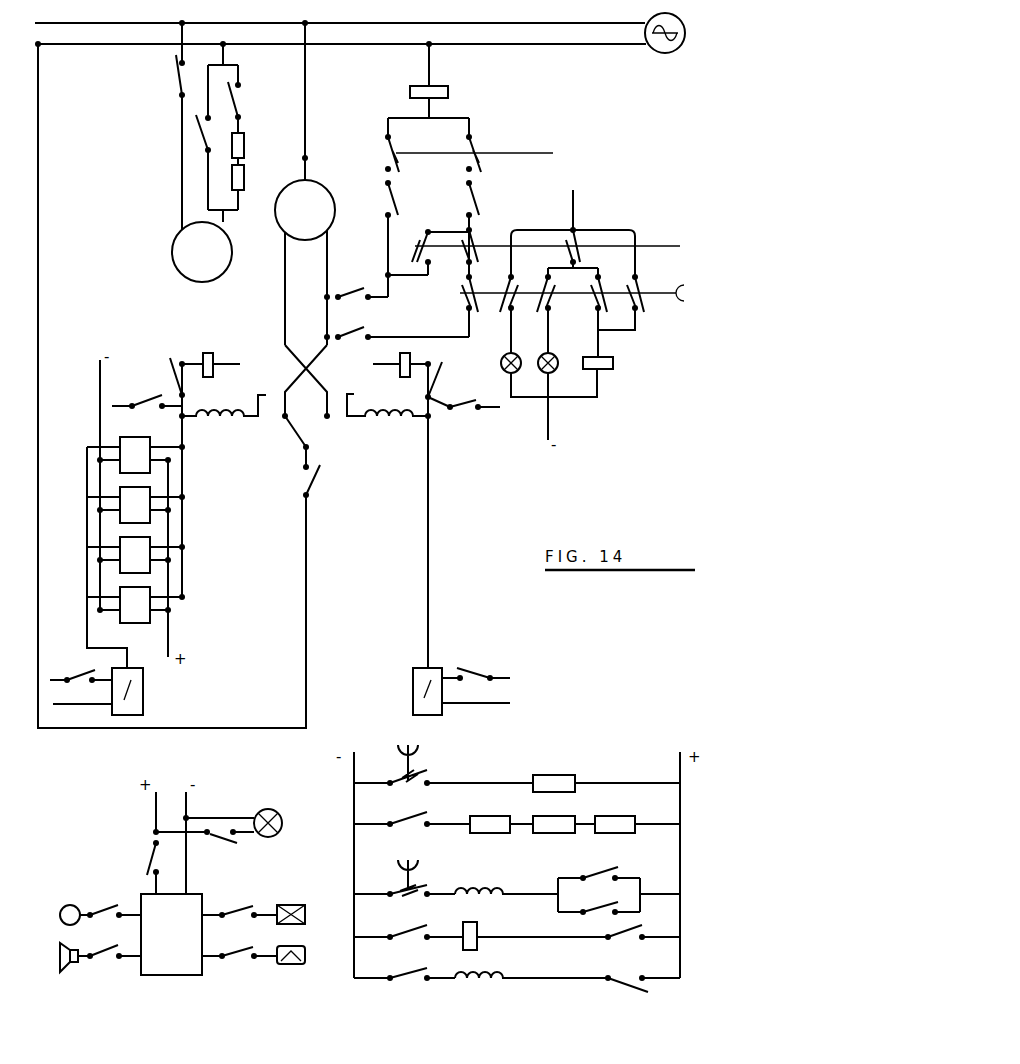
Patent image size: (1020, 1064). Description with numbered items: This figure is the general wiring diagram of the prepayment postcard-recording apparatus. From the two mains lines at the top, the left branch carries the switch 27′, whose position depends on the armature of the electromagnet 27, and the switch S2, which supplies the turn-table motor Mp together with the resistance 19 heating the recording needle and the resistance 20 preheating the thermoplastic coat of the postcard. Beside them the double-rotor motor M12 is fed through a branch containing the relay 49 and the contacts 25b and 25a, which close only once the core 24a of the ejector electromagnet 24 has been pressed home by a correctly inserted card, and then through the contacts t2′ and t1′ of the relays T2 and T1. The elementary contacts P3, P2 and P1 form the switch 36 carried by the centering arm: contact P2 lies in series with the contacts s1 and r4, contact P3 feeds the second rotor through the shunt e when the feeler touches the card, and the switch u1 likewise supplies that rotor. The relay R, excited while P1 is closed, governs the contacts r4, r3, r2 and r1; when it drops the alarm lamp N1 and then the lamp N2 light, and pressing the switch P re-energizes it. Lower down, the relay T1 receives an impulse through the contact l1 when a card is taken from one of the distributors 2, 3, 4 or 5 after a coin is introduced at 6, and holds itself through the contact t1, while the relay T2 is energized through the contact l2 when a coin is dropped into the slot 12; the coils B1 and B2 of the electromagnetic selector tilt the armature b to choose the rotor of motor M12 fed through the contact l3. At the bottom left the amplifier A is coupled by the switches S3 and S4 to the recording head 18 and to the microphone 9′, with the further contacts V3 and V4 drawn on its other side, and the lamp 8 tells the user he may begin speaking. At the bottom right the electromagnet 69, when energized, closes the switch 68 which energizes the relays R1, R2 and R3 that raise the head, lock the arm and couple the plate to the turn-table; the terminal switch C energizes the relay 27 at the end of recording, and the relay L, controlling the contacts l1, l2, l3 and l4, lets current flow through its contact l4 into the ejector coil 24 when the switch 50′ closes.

The switch 27′ is at (165, 126).
The switch S2 is at (228, 133).
The resistance 19 is at (244, 146).
The resistance 20 is at (244, 178).
The motor Mp is at (202, 252).
The double-rotor motor M12 is at (305, 184).
The relay 49 is at (433, 90).
The switch 25b is at (378, 154).
The contact 25a is at (490, 149).
The core 24a is at (553, 153).
The contact t2′ is at (400, 238).
The contact t1′ is at (482, 228).
The contact P3 is at (427, 253).
The contact P2 is at (478, 253).
The contact P1 is at (573, 233).
The switch 36 is at (660, 246).
The switch u1 is at (356, 284).
The shunt e is at (408, 285).
The switch s1 is at (396, 324).
The contact r4 is at (463, 307).
The contact r3 is at (515, 313).
The contact r2 is at (553, 315).
The contact r1 is at (613, 317).
The switch P is at (666, 294).
The alarm lamp N1 is at (504, 359).
The lamp N2 is at (541, 359).
The relay R is at (606, 369).
The relay T1 is at (211, 367).
The contact l1 is at (167, 370).
The contact t1 is at (143, 393).
The coil B1 is at (222, 423).
The movable armature b is at (297, 443).
The contact l3 is at (319, 596).
The relay T2 is at (401, 367).
The contact l2 is at (462, 386).
The coil B2 is at (389, 422).
The distributor 2 is at (136, 455).
The distributor 3 is at (136, 505).
The distributor 4 is at (136, 555).
The distributor 5 is at (136, 605).
The coin slot 6 is at (143, 708).
The slot 12 is at (413, 705).
The amplifier A is at (171, 934).
The lamp 8 is at (278, 811).
The microphone 9′ is at (62, 908).
The switch S4 is at (114, 899).
The switch V4 is at (114, 965).
The switch S3 is at (239, 899).
The recording head 18 is at (287, 905).
The switch V3 is at (253, 965).
The electromagnet 69 is at (553, 783).
The switch 68 is at (412, 811).
The relay R1 is at (486, 826).
The relay R2 is at (548, 833).
The electromagnetic relay R3 is at (622, 826).
The terminal switch C is at (404, 867).
The electromagnet 27 is at (506, 877).
The relay L is at (477, 930).
The contact l4 is at (404, 966).
The ejector electromagnet 24 is at (531, 963).
The switch 50′ is at (642, 993).